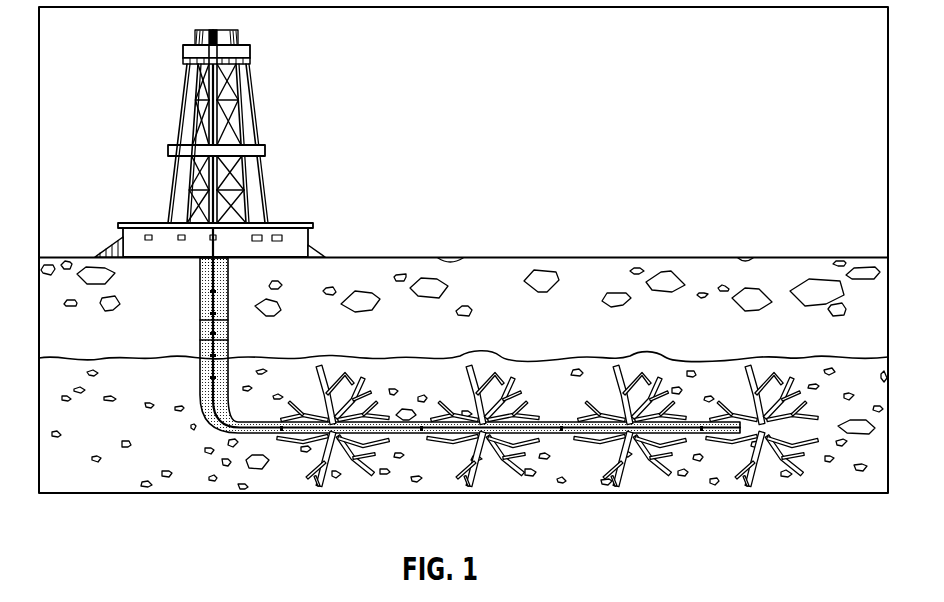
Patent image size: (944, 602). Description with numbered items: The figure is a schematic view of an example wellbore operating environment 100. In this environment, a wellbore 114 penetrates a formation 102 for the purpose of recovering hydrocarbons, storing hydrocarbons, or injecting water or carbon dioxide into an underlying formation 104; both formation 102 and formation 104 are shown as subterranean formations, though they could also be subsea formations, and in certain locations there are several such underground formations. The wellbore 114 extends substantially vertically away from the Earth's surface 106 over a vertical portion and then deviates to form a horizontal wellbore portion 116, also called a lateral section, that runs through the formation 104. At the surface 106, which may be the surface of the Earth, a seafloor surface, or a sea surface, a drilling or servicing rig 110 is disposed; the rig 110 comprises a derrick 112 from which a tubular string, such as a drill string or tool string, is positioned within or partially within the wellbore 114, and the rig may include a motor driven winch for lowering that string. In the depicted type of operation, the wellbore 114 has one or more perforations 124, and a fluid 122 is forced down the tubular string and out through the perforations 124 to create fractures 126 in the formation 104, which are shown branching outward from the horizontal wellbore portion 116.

The operating environment 100 is at (324, 50).
The formation 102 is at (512, 298).
The formation 104 is at (584, 405).
The Earth's surface 106 is at (408, 256).
The drilling or servicing rig 110 is at (266, 126).
The derrick 112 is at (183, 128).
The wellbore 114 is at (198, 300).
The horizontal wellbore portion 116 is at (415, 377).
The fluid 122 is at (200, 399).
The perforations 124 is at (486, 440).
The fractures 126 is at (644, 480).